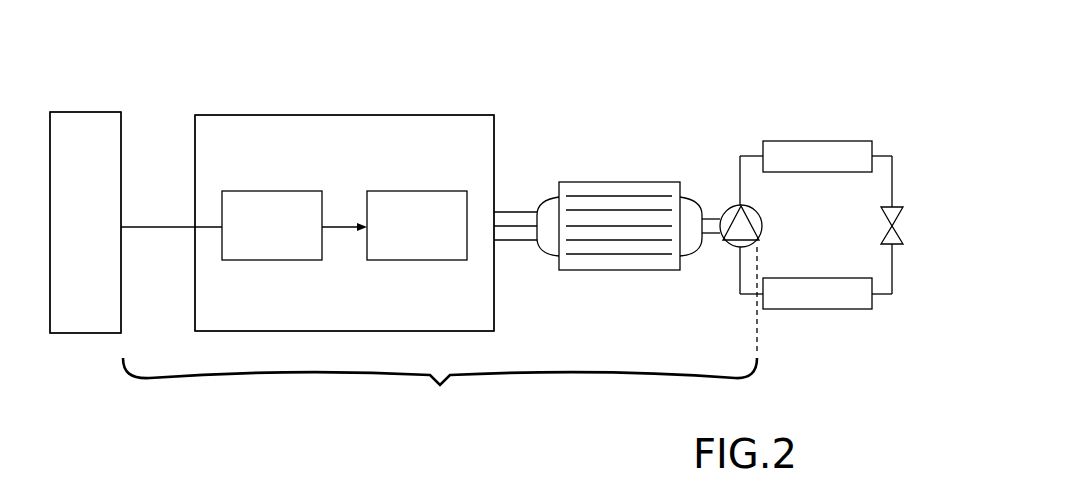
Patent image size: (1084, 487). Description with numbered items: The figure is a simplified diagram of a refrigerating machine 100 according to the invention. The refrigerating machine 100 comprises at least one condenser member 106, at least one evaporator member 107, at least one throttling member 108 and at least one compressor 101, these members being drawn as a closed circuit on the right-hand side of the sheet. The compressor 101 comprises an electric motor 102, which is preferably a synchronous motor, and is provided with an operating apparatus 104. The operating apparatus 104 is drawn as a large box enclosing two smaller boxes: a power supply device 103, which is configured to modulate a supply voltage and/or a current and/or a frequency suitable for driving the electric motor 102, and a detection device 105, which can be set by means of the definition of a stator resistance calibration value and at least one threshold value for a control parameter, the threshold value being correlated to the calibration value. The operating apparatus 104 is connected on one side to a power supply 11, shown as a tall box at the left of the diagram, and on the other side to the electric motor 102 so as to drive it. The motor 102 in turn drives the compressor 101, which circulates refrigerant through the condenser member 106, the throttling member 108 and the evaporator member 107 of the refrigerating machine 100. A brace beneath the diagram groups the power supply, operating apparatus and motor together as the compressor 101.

The refrigerating machine 100 is at (810, 72).
The power supply 11 is at (78, 104).
The compressor 101 is at (440, 331).
The electric motor 102 is at (636, 172).
The power supply device 103 is at (255, 200).
The operating apparatus 104 is at (477, 104).
The detection device 105 is at (404, 200).
The condenser member 106 is at (815, 148).
The evaporator member 107 is at (808, 302).
The throttling member 108 is at (900, 218).